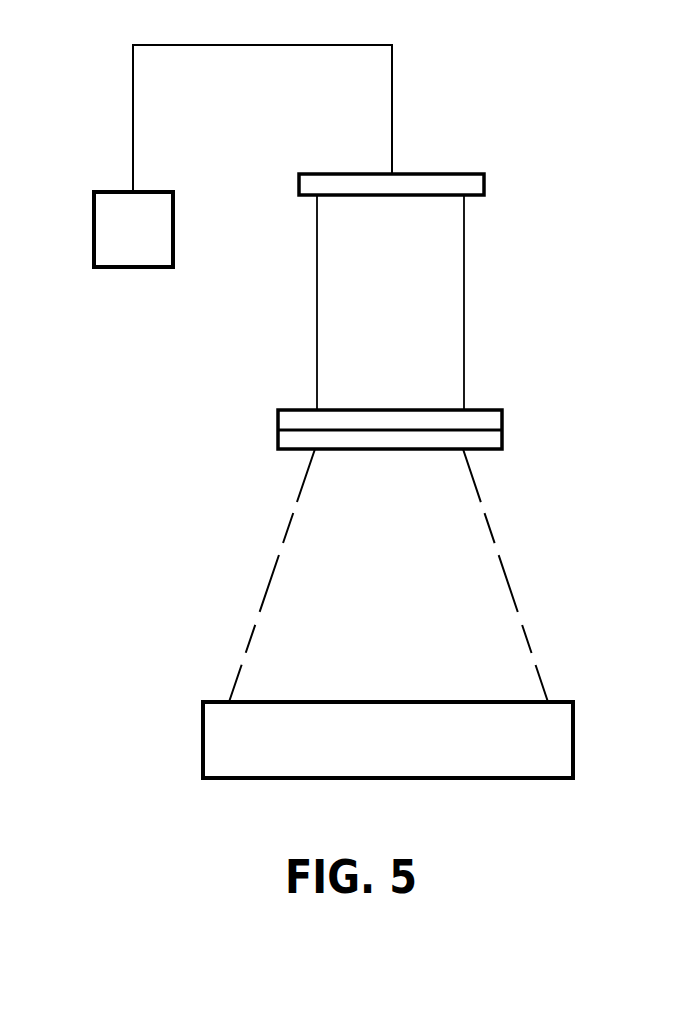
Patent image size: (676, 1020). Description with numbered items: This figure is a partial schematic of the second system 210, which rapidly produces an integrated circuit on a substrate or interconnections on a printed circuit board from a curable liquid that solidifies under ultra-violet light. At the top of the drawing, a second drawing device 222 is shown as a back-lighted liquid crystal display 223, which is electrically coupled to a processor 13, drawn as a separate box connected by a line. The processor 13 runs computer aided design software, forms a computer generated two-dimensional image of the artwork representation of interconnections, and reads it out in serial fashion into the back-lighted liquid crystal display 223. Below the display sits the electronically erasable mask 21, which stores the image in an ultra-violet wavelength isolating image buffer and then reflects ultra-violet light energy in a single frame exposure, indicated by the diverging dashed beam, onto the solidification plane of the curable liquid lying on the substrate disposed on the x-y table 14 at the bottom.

The processor 13 is at (113, 268).
The x-y table 14 is at (573, 727).
The electronically erasable mask 21 is at (502, 432).
The second system 210 is at (495, 522).
The second drawing device 222 is at (431, 259).
The back-lighted liquid crystal display 223 is at (484, 183).